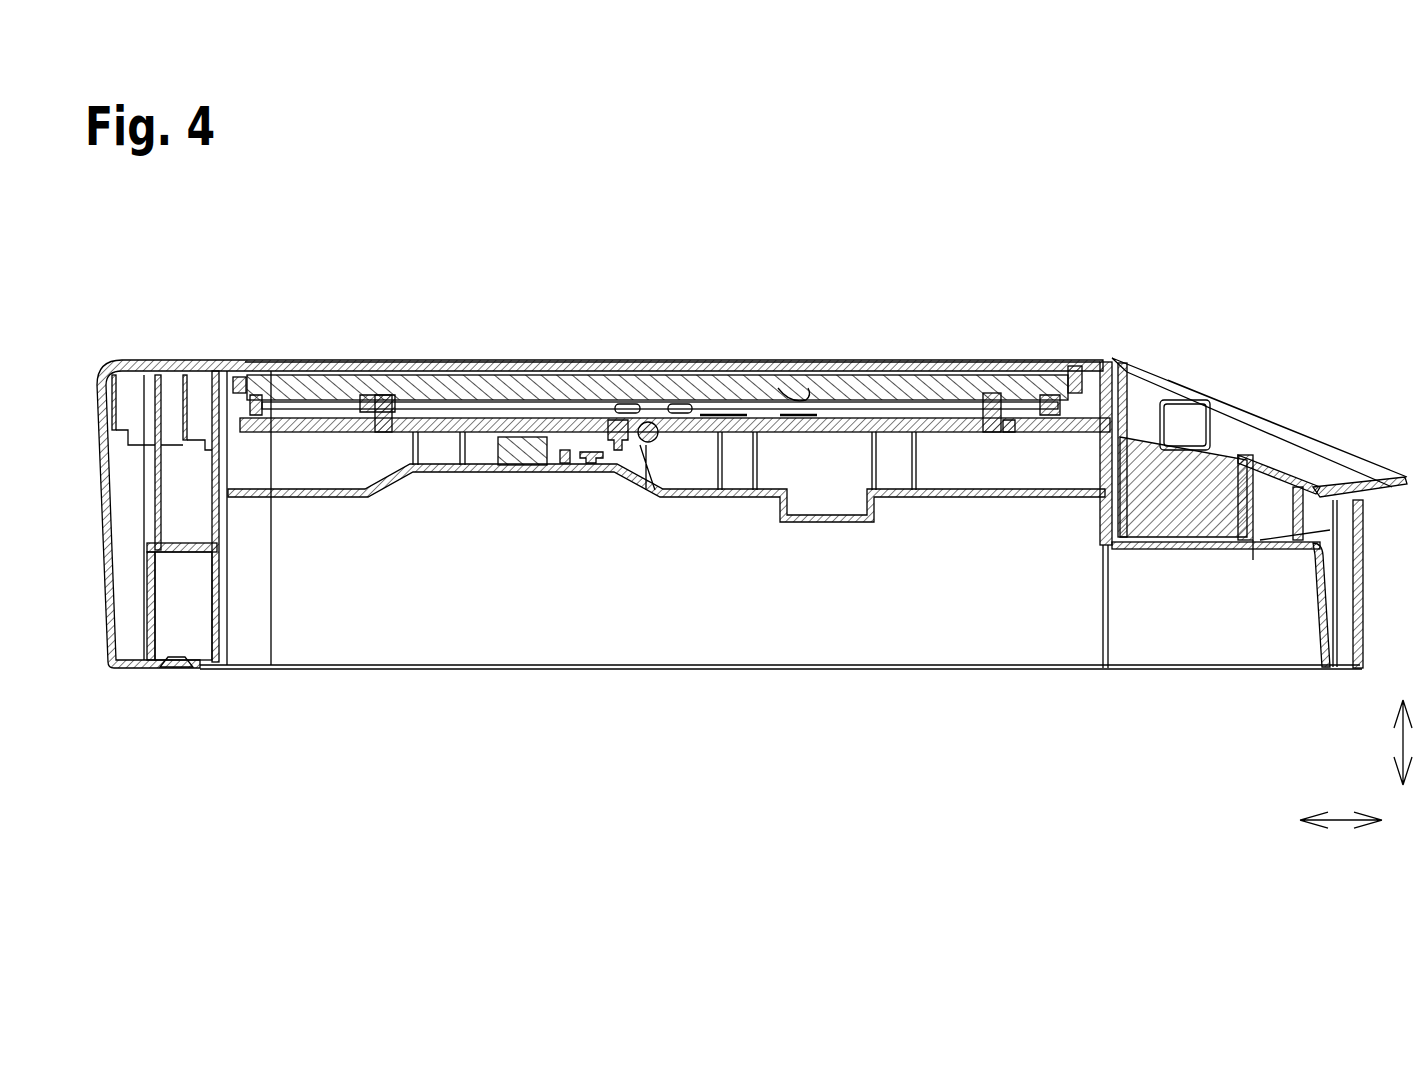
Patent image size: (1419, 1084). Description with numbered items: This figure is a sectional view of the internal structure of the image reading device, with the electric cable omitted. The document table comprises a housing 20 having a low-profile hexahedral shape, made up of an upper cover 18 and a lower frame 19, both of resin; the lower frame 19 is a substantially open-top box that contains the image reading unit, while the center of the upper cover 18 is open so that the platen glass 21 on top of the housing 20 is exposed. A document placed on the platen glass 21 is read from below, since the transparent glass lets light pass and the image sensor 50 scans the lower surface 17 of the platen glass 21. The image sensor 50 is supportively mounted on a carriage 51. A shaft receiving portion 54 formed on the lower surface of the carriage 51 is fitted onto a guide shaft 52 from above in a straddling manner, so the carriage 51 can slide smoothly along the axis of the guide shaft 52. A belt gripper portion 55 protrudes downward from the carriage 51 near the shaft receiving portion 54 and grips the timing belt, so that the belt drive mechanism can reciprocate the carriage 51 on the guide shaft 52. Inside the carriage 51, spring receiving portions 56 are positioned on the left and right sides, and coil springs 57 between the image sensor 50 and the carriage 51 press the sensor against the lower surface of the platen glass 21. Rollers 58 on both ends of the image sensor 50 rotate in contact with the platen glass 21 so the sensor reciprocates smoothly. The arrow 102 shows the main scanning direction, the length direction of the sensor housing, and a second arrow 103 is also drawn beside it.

The lower surface of platen glass 17 is at (805, 398).
The upper cover 18 is at (160, 372).
The lower frame 19 is at (125, 670).
The housing 20 is at (377, 726).
The platen glass 21 is at (512, 368).
The image sensor 50 is at (598, 392).
The carriage 51 is at (807, 452).
The guide shaft 52 is at (660, 455).
The shaft receiving portion 54 is at (656, 440).
The belt gripper portion 55 is at (614, 450).
The spring receiving portions 56 is at (392, 432).
The coil springs 57 is at (363, 420).
The rollers 58 is at (240, 395).
The arrow 102 is at (1340, 822).
The vertical direction 103 is at (1402, 745).